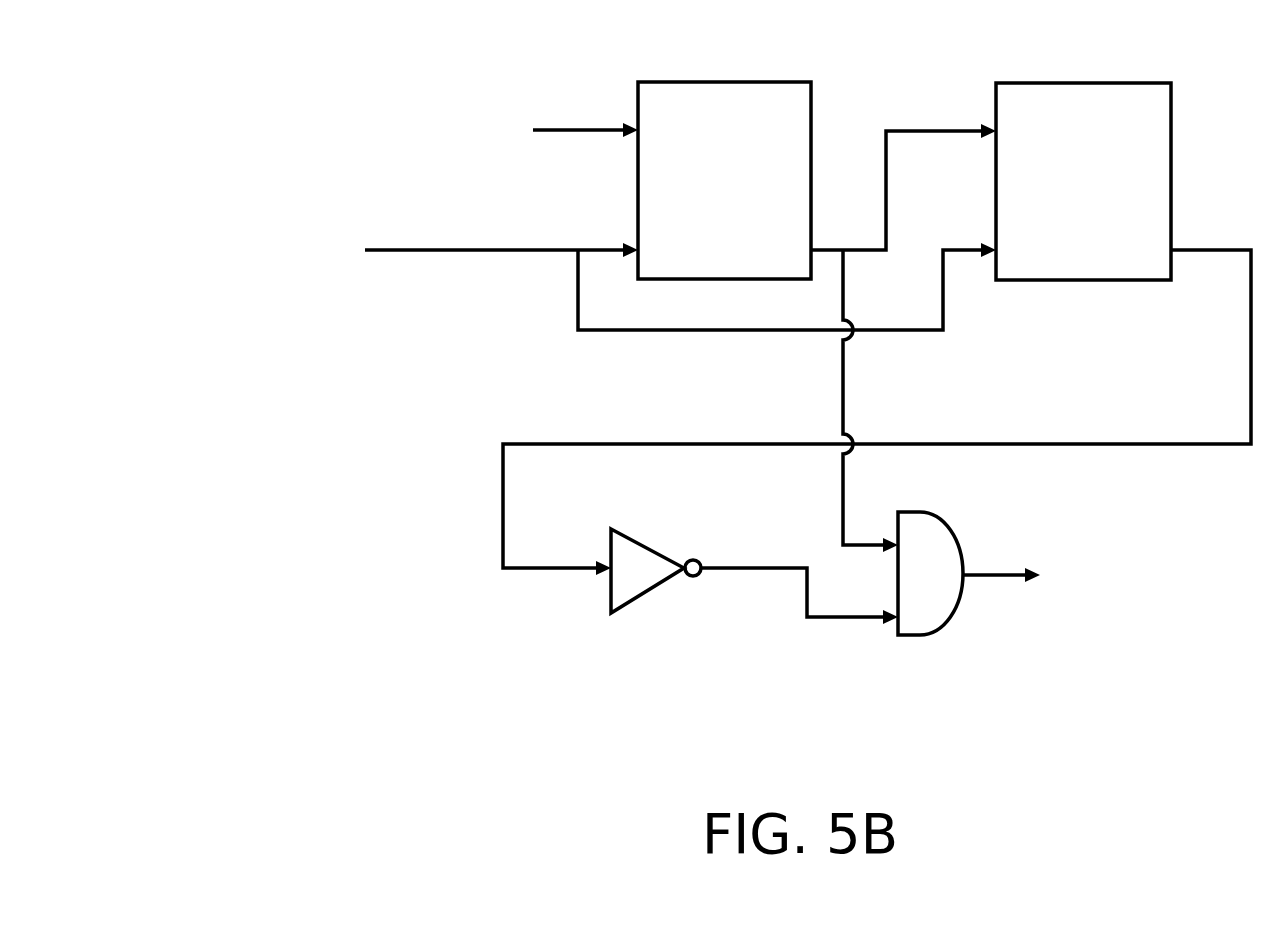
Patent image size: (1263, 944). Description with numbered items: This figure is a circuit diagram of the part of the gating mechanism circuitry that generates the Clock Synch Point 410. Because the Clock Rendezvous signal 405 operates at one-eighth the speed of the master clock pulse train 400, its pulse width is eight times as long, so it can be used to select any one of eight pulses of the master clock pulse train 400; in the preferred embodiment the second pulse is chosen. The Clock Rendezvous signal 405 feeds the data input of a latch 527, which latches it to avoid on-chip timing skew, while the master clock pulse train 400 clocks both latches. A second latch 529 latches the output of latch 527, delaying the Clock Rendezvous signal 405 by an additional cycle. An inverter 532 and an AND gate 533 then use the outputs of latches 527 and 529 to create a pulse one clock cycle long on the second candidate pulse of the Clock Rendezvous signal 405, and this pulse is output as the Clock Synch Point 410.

The Clock Rendezvous signal 405 is at (332, 113).
The master clock pulse train 400 is at (297, 282).
The latch 527 is at (757, 80).
The latch 529 is at (1125, 82).
The inverter 532 is at (650, 594).
The AND gate 533 is at (910, 636).
The Clock Synch Point 410 is at (1172, 610).